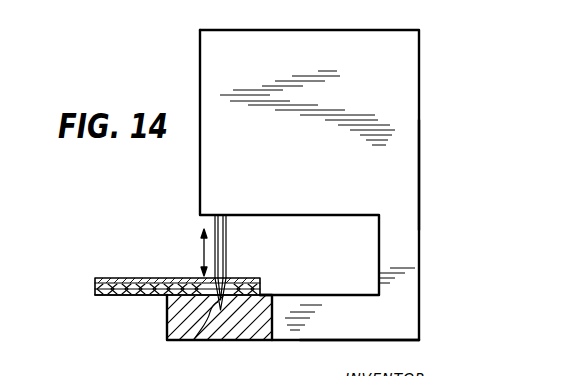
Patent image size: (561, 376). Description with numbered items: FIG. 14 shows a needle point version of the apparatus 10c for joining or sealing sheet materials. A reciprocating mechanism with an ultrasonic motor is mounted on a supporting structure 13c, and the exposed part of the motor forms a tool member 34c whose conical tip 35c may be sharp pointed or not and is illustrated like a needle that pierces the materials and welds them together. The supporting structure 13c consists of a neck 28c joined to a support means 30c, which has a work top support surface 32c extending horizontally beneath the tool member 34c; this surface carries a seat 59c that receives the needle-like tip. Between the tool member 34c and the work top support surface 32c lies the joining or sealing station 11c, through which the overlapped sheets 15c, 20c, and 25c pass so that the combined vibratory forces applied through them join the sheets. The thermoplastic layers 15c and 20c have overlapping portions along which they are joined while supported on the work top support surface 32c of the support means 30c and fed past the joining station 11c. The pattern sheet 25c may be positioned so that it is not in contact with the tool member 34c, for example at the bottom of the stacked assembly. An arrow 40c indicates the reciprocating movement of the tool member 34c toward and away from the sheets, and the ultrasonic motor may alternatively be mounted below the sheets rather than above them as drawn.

The apparatus 10c is at (424, 116).
The supporting structure 13c is at (412, 174).
The neck 28c is at (402, 262).
The work top support surface 32c is at (316, 292).
The support means 30c is at (368, 330).
The seat 59c is at (195, 338).
The joining or sealing station 11c is at (145, 292).
The pattern sheet 25c is at (100, 279).
The sheet of thermoplastic material 20c is at (95, 290).
The sheet of thermoplastic material 15c is at (154, 319).
The tool member 34c is at (224, 229).
The conical tip 35c is at (226, 282).
The reciprocating motion arrow 40c is at (203, 255).